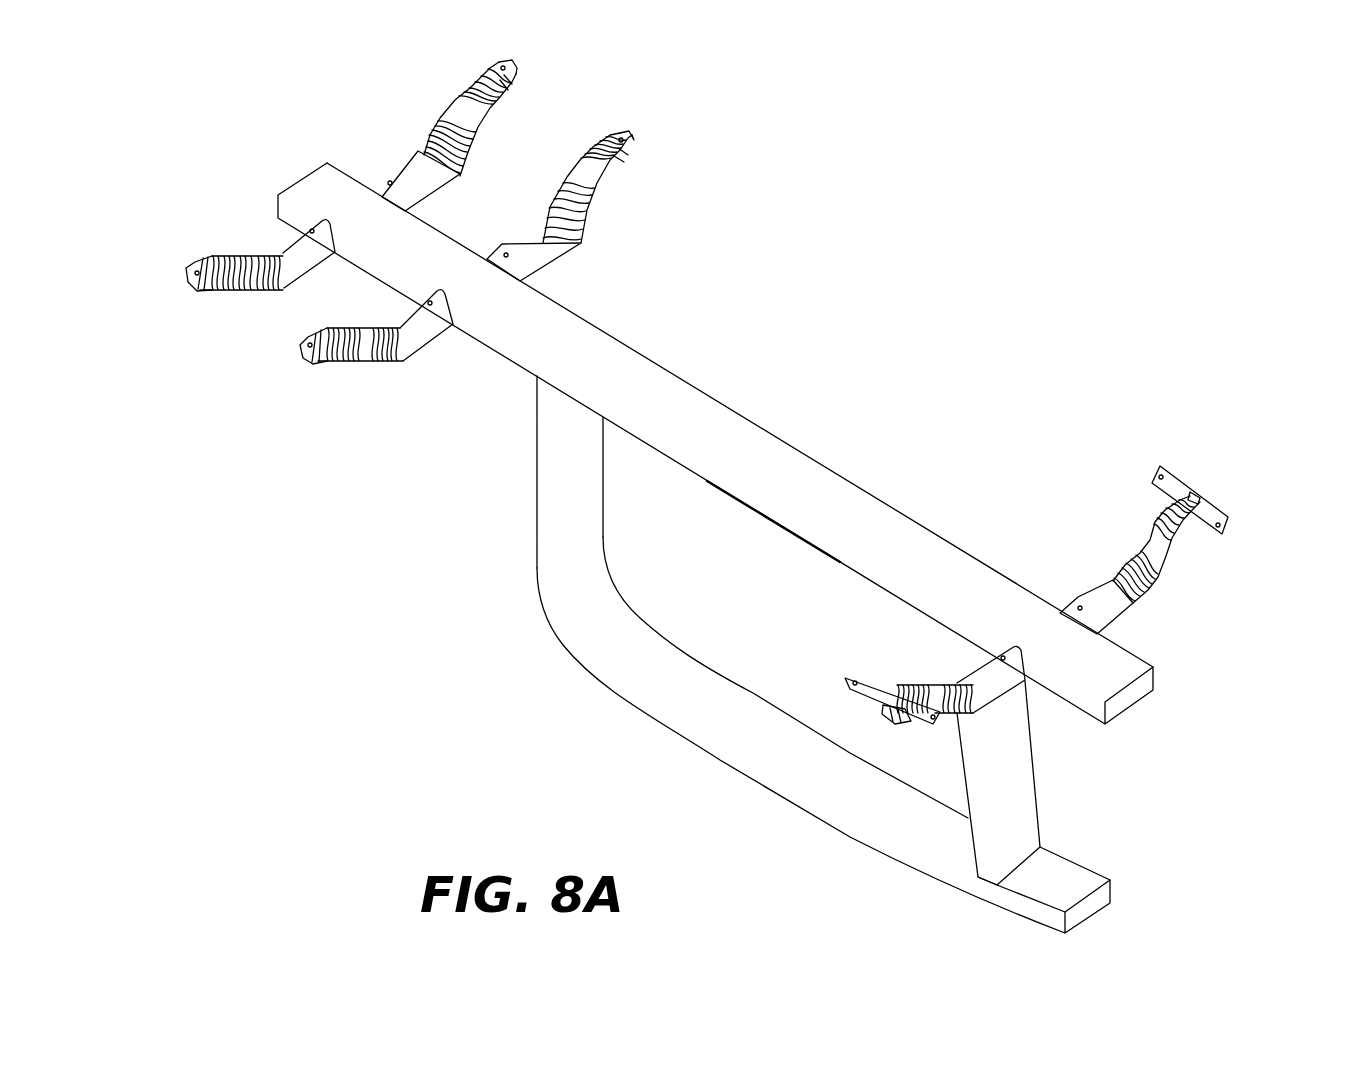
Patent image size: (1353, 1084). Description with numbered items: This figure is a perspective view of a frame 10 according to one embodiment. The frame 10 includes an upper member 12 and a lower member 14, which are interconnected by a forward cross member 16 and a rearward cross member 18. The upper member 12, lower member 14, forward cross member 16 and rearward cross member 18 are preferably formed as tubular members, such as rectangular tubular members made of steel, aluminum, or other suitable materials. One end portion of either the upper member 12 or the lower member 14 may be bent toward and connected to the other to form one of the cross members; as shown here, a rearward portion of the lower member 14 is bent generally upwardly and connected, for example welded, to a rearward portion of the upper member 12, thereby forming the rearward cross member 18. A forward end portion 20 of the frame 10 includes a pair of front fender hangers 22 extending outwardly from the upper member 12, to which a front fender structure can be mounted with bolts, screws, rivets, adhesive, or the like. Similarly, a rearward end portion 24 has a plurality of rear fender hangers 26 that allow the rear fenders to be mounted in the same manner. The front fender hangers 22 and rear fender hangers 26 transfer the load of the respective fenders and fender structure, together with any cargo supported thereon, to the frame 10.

The frame 10 is at (800, 376).
The upper member 12 is at (838, 502).
The lower member 14 is at (685, 695).
The forward cross member 16 is at (1020, 807).
The rearward cross member 18 is at (553, 465).
The forward end portion 20 is at (1037, 574).
The front fender hangers 22 is at (1208, 512).
The rearward end portion 24 is at (590, 300).
The rear fender hangers 26 is at (191, 272).